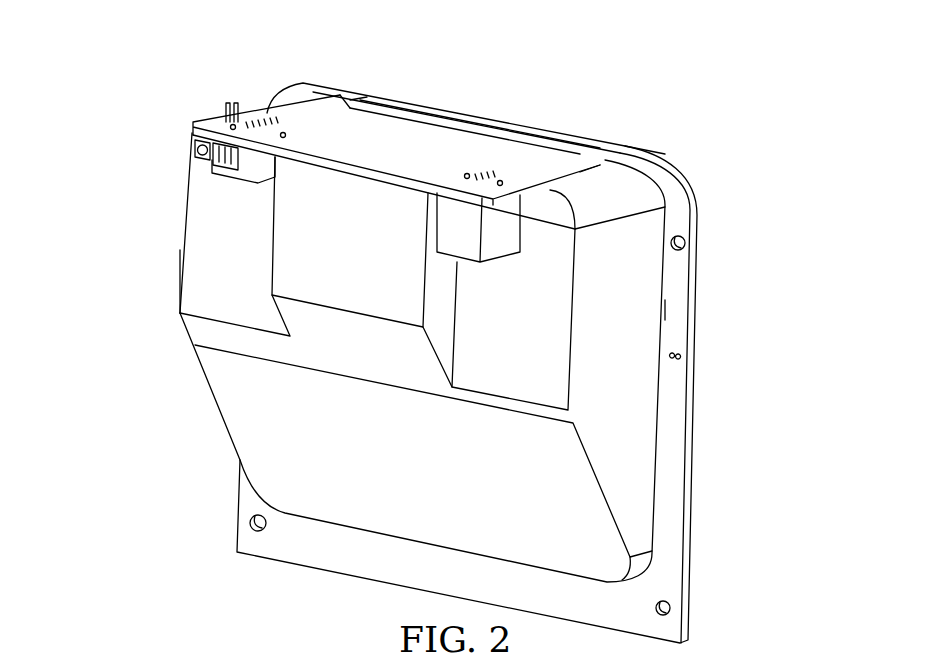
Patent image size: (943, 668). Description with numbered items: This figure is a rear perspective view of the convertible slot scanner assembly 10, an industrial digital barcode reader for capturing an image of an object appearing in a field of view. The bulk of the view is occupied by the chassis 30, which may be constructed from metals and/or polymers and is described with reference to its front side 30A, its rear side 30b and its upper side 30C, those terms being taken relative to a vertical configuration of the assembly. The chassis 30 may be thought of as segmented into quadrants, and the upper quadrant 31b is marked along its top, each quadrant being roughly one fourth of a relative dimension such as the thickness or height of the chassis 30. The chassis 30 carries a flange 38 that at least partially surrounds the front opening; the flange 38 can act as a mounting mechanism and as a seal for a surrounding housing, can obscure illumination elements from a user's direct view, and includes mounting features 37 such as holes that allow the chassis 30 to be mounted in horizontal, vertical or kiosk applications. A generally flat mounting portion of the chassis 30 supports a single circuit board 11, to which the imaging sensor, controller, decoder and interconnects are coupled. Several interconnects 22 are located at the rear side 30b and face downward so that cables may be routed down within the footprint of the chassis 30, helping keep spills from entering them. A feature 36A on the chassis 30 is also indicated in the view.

The convertible slot scanner assembly 10 is at (128, 450).
The circuit board 11 is at (328, 118).
The interconnect 22 is at (198, 153).
The chassis body 30 is at (678, 440).
The front side 30A is at (626, 126).
The rear side 30b is at (165, 270).
The upper side 30C is at (462, 98).
The upper quadrant 31b is at (708, 162).
The mounting feature 36A is at (682, 353).
The mounting features 37 is at (670, 606).
The flange 38 is at (580, 178).